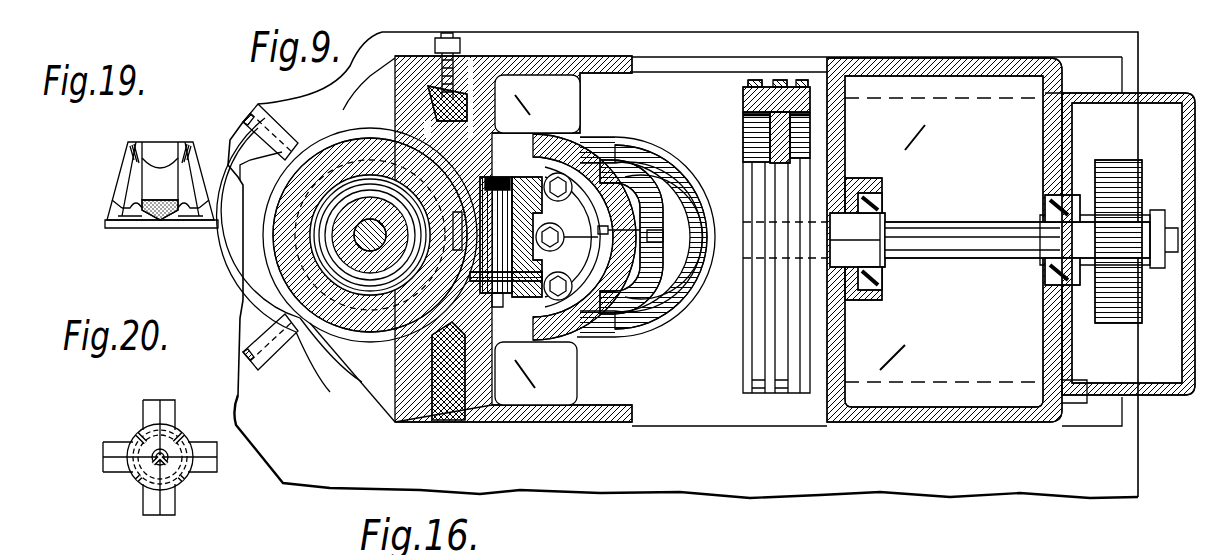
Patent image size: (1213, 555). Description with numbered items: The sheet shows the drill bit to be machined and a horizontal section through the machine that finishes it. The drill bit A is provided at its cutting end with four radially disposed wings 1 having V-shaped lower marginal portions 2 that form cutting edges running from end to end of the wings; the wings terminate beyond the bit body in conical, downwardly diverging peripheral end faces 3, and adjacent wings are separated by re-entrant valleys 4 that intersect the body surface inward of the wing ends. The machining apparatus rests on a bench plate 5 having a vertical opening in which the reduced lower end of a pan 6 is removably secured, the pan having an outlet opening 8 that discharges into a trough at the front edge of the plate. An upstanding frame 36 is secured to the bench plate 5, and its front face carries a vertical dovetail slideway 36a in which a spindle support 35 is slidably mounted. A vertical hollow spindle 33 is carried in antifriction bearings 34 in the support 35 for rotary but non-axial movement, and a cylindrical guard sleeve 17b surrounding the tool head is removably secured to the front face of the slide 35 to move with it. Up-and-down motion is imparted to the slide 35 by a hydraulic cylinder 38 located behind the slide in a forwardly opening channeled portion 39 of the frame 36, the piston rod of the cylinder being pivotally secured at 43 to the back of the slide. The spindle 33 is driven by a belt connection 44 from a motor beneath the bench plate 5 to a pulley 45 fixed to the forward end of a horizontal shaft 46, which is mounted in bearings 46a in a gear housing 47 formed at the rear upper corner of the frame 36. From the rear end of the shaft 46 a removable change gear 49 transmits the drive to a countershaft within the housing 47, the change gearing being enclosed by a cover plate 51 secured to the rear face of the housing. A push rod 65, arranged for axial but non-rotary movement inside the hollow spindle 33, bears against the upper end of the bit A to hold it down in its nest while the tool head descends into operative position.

In FIG. 19, the wings 1 is at (122, 182).
In FIG. 20, the wings 1 is at (176, 410).
In FIG. 19, the V-shaped lower marginal portions 2 is at (128, 228).
In FIG. 20, the V-shaped lower marginal portions 2 is at (162, 404).
In FIG. 19, the conical peripheral end faces 3 is at (108, 211).
In FIG. 20, the conical peripheral end faces 3 is at (162, 400).
In FIG. 19, the valleys 4 is at (135, 182).
In FIG. 20, the valleys 4 is at (142, 441).
In FIG. 19, the drill bit A is at (160, 152).
In FIG. 20, the drill bit A is at (110, 495).
In FIG. 9, the bench plate 5 is at (898, 490).
In FIG. 9, the pan 6 is at (330, 348).
In FIG. 9, the outlet opening 8 is at (243, 276).
In FIG. 9, the guard sleeve 17b is at (318, 318).
In FIG. 9, the spindle 33 is at (395, 258).
In FIG. 9, the antifriction bearings 34 is at (346, 188).
In FIG. 9, the support 35 is at (392, 376).
In FIG. 9, the frame 36 is at (488, 423).
In FIG. 9, the dovetail slideway 36a is at (456, 400).
In FIG. 9, the hydraulic cylinder 38 is at (612, 264).
In FIG. 9, the channeled portion 39 is at (682, 300).
In FIG. 9, the pivotal connection 43 is at (546, 226).
In FIG. 9, the belt connection 44 is at (797, 394).
In FIG. 9, the pulley 45 is at (745, 115).
In FIG. 9, the horizontal shaft 46 is at (950, 258).
In FIG. 9, the bearings 46a is at (884, 212).
In FIG. 9, the gear housing 47 is at (940, 423).
In FIG. 9, the change gear 49 is at (1115, 323).
In FIG. 9, the cover plate 51 is at (1160, 395).
In FIG. 9, the push rod 65 is at (370, 218).